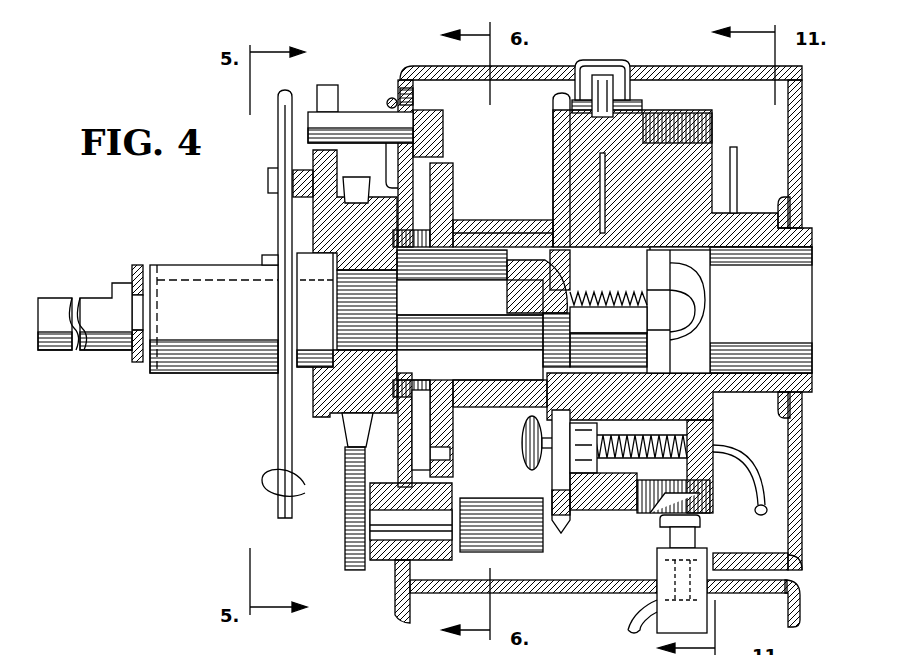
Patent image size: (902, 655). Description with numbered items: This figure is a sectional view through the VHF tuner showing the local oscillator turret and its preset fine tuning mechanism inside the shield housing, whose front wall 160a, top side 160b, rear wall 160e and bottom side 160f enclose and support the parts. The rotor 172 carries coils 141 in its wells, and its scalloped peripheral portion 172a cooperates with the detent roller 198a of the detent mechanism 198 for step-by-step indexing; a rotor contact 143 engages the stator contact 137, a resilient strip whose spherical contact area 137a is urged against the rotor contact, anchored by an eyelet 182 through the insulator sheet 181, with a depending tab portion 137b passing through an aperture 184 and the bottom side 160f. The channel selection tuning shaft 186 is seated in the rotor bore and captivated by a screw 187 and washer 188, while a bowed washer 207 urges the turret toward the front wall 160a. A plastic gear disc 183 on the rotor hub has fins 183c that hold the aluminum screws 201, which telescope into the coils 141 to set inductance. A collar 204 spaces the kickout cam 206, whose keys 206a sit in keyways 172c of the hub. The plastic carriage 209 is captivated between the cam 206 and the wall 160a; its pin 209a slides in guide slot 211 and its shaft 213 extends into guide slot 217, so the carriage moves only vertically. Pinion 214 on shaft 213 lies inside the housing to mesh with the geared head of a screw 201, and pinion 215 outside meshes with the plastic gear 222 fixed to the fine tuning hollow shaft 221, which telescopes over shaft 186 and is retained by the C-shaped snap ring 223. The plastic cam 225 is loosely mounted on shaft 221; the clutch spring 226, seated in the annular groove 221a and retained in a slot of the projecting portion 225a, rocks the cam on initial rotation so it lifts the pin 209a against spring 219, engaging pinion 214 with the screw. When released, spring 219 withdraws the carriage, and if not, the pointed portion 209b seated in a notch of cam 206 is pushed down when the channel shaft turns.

The stator contact 137 is at (710, 545).
The contact area 137a is at (663, 522).
The depending tab portion 137b is at (660, 612).
The coil 141 is at (715, 448).
The rotor contact 143 is at (710, 487).
The front wall 160a is at (398, 425).
The top side 160b is at (778, 66).
The rear wall 160e is at (803, 140).
The bottom side 160f is at (565, 590).
The rotor 172 is at (712, 150).
The peripheral portion 172a is at (600, 110).
The keyways 172c is at (412, 248).
The insulator sheet 181 is at (802, 562).
The eyelet 182 is at (777, 603).
The plastic gear disc 183 is at (553, 147).
The fins 183c is at (585, 515).
The aperture 184 is at (707, 610).
The channel selection tuning shaft 186 is at (95, 300).
The screw 187 is at (712, 312).
The washer 188 is at (680, 368).
The detent mechanism 198 is at (588, 60).
The detent roller 198a is at (607, 75).
The aluminum screw 201 is at (522, 443).
The plastic sleeve or collar 204 is at (483, 222).
The kickout cam 206 is at (453, 175).
The keys 206a is at (445, 250).
The bowed washer 207 is at (785, 197).
The plastic carriage 209 is at (443, 125).
The stub or pin 209a is at (363, 112).
The pointed portion 209b is at (441, 455).
The guide slot 211 is at (413, 97).
The shaft 213 is at (345, 560).
The pinion 214 is at (483, 512).
The pinion 215 is at (365, 525).
The guide slot 217 is at (400, 465).
The spring 219 is at (395, 98).
The fine tuning hollow shaft 221 is at (190, 378).
The annular groove 221a is at (275, 262).
The plastic gear 222 is at (348, 178).
The C-shaped snap ring 223 is at (137, 265).
The plastic cam 225 is at (295, 232).
The projecting portion 225a is at (330, 85).
The clutch spring 226 is at (282, 128).